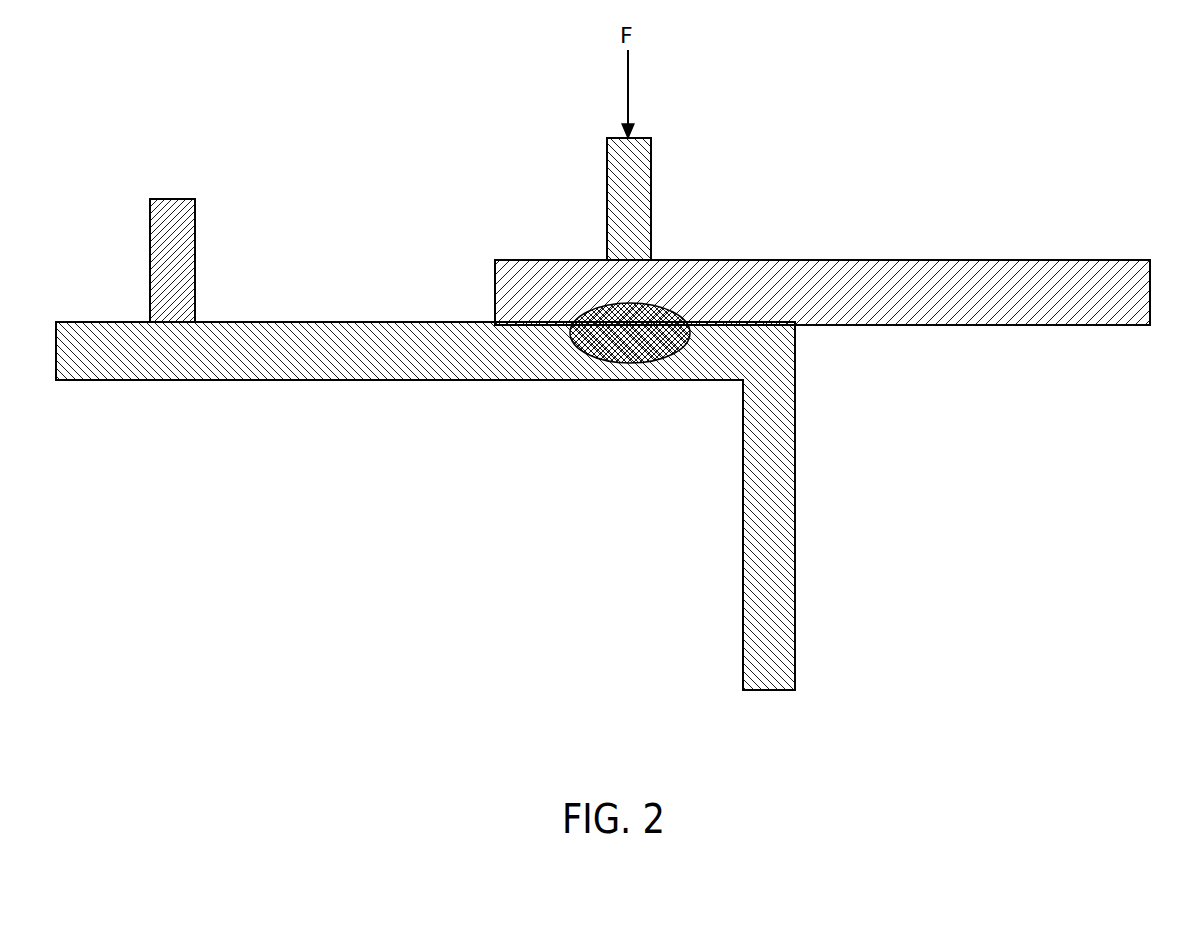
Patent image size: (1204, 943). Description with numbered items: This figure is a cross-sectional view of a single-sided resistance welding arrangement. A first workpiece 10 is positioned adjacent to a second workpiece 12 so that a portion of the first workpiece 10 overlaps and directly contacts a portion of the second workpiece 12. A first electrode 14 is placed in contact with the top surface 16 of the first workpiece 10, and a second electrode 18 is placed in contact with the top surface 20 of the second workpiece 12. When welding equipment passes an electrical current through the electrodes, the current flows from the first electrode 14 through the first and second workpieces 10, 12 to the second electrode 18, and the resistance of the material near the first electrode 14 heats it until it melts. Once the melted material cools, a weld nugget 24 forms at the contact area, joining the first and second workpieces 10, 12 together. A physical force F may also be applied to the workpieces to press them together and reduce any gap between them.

The first workpiece 10 is at (917, 280).
The second workpiece 12 is at (86, 360).
The first electrode 14 is at (615, 200).
The top surface 16 is at (972, 262).
The second electrode 18 is at (158, 243).
The top surface 20 is at (365, 322).
The weld nugget 24 is at (646, 358).